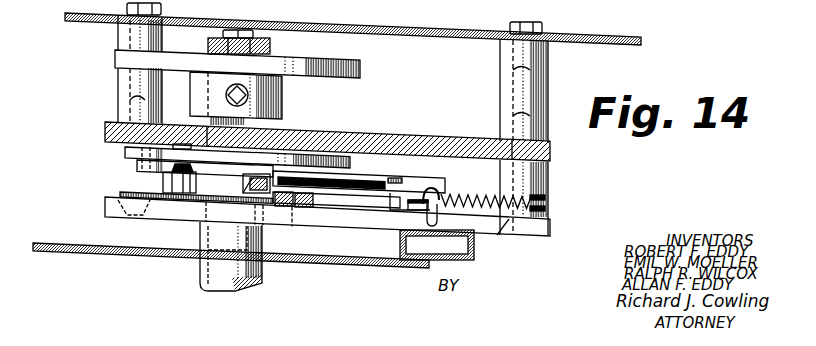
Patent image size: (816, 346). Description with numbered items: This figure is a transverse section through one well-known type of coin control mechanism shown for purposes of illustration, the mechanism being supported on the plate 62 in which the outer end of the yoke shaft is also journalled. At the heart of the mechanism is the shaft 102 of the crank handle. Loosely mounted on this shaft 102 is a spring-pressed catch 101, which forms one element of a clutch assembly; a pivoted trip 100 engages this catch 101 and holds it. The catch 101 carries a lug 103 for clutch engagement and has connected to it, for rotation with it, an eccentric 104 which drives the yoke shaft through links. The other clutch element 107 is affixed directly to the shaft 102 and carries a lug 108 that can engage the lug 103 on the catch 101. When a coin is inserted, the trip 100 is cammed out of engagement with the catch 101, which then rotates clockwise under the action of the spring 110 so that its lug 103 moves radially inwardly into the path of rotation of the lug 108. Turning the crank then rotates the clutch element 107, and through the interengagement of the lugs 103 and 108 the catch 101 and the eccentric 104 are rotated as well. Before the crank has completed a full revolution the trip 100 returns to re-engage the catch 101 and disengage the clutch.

The plate 62 is at (591, 42).
The pivoted trip 100 is at (393, 200).
The spring-pressed catch 101 is at (352, 175).
The shaft 102 is at (215, 282).
The lug 103 is at (283, 152).
The eccentric 104 is at (361, 69).
The clutch element 107 is at (345, 197).
The lug 108 is at (173, 183).
The spring 110 is at (368, 186).